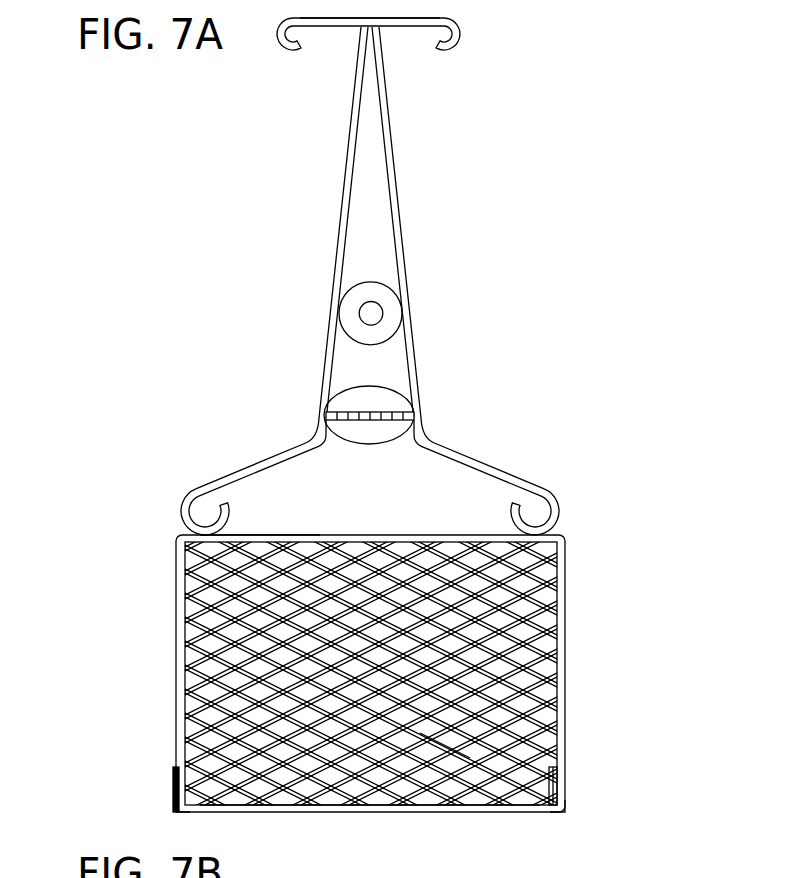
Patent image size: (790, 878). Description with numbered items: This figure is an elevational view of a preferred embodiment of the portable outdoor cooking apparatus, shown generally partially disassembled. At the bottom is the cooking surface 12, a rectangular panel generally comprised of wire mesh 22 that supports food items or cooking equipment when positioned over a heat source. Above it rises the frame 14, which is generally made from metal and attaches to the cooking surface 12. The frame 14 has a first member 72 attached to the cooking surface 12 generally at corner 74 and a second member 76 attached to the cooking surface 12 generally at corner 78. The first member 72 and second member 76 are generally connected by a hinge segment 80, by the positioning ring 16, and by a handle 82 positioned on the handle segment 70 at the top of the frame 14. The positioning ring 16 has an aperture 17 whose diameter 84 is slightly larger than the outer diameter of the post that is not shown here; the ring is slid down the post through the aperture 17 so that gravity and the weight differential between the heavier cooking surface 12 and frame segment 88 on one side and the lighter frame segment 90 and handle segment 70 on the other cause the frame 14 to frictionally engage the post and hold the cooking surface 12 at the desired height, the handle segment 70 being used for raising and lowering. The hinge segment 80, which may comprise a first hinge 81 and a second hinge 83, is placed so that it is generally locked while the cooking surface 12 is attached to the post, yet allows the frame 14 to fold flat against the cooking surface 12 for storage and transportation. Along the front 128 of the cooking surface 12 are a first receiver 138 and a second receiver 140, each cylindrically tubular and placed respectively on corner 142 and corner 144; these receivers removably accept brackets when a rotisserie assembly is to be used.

The cooking surface 12 is at (488, 742).
The frame 14 is at (567, 688).
The positioning ring 16 is at (347, 291).
The aperture 17 is at (359, 313).
The wire mesh 22 is at (447, 760).
The handle segment 70 is at (457, 45).
The first member 72 is at (313, 222).
The corner 74 is at (182, 515).
The second member 76 is at (401, 231).
The corner 78 is at (556, 520).
The hinge segment 80 is at (400, 422).
The first hinge 81 is at (250, 534).
The handle 82 is at (387, 22).
The second hinge 83 is at (540, 537).
The diameter 84 is at (382, 318).
The frame segment 88 is at (355, 86).
The frame segment 90 is at (323, 374).
The front 128 is at (407, 813).
The first receiver 138 is at (175, 814).
The second receiver 140 is at (558, 787).
The corner 142 is at (181, 767).
The corner 144 is at (562, 812).